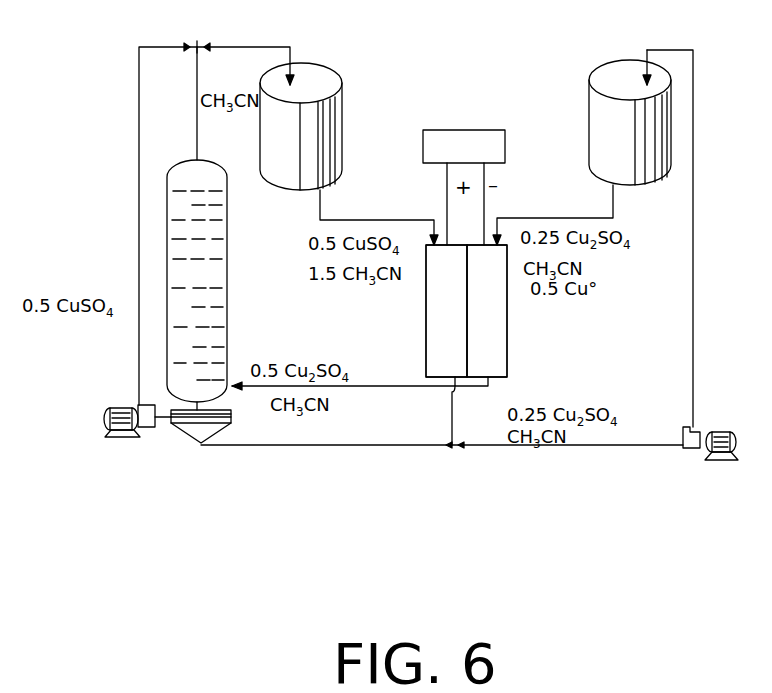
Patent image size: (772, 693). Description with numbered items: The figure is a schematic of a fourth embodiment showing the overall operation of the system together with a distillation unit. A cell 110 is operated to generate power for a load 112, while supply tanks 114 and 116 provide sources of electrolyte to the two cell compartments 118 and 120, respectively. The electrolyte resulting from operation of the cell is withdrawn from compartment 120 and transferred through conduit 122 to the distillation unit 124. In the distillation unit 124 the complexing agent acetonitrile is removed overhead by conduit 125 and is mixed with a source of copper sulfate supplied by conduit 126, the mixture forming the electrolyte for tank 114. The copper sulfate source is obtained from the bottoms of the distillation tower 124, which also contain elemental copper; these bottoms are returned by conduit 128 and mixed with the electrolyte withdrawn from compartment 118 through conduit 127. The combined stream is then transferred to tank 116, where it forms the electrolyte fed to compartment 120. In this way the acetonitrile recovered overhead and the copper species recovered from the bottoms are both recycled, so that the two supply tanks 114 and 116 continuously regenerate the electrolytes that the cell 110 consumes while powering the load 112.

The cell 110 is at (516, 299).
The load 112 is at (478, 130).
The supply tank 114 is at (343, 107).
The supply tank 116 is at (590, 147).
The compartment 118 is at (426, 312).
The compartment 120 is at (507, 337).
The conduit 122 is at (366, 386).
The distillation unit 124 is at (236, 299).
The conduit 125 is at (198, 68).
The conduit 126 is at (167, 47).
The conduit 127 is at (455, 417).
The conduit 128 is at (282, 450).